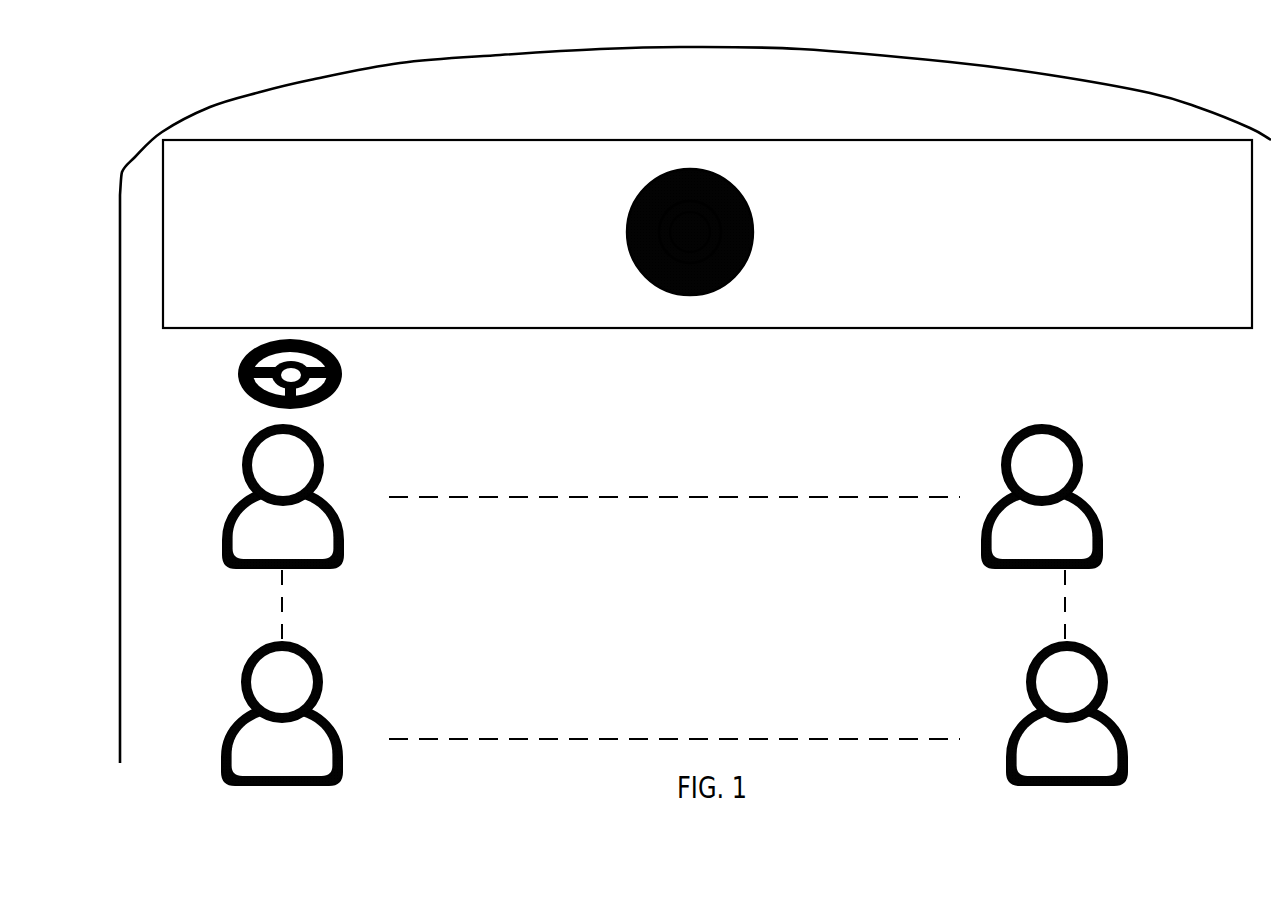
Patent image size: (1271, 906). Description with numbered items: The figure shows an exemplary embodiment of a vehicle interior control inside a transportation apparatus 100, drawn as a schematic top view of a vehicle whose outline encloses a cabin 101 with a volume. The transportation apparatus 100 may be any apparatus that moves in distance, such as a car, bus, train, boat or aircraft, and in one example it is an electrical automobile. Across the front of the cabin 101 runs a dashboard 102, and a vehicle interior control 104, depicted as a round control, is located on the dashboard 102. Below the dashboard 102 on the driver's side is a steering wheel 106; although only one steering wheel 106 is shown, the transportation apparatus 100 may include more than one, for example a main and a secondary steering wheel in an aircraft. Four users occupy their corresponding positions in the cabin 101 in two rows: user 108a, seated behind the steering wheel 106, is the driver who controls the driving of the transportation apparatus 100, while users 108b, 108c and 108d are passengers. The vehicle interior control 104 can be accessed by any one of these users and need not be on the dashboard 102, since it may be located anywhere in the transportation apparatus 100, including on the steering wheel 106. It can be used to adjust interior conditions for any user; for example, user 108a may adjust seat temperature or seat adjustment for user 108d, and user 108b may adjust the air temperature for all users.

The transportation apparatus 100 is at (1180, 104).
The cabin 101 is at (720, 97).
The dashboard 102 is at (778, 140).
The vehicle interior control 104 is at (755, 250).
The steering wheel 106 is at (342, 373).
The user 108a is at (317, 450).
The user 108b is at (1070, 435).
The user 108c is at (318, 663).
The user 108d is at (1098, 660).